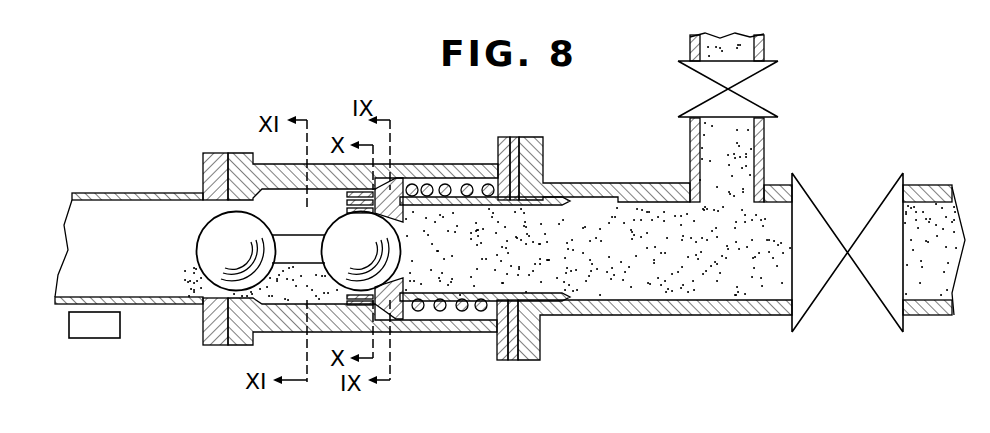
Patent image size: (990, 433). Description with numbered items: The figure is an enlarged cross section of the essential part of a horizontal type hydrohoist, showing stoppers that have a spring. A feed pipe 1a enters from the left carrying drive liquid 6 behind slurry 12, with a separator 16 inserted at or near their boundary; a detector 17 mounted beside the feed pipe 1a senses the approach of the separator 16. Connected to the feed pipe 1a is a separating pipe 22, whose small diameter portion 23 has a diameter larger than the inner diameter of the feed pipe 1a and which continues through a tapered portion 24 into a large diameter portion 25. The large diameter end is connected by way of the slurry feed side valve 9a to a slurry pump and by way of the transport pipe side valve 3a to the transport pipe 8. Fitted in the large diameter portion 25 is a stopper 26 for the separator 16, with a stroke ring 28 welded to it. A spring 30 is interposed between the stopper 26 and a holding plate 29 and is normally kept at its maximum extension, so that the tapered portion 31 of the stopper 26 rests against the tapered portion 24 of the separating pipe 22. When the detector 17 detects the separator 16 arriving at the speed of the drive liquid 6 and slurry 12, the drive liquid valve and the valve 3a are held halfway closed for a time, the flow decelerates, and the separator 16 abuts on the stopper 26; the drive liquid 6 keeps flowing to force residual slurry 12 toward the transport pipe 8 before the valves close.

The feed pipe 1a is at (140, 192).
The separating pipe 22 is at (259, 165).
The small diameter portion 23 is at (289, 306).
The drive liquid 6 is at (165, 274).
The detector 17 is at (101, 331).
The separator 16 is at (292, 241).
The tapered portion of separating pipe 24 is at (403, 180).
The stopper 26 is at (395, 215).
The tapered portion of stopper 31 is at (401, 210).
The spring 30 is at (470, 183).
The stroke ring 28 is at (443, 310).
The holding plate 29 is at (513, 138).
The large diameter portion 25 is at (490, 316).
The slurry 12 is at (603, 274).
The slurry feed side valve 9a is at (708, 99).
The transport pipe side valve 3a is at (885, 206).
The transport pipe 8 is at (939, 190).